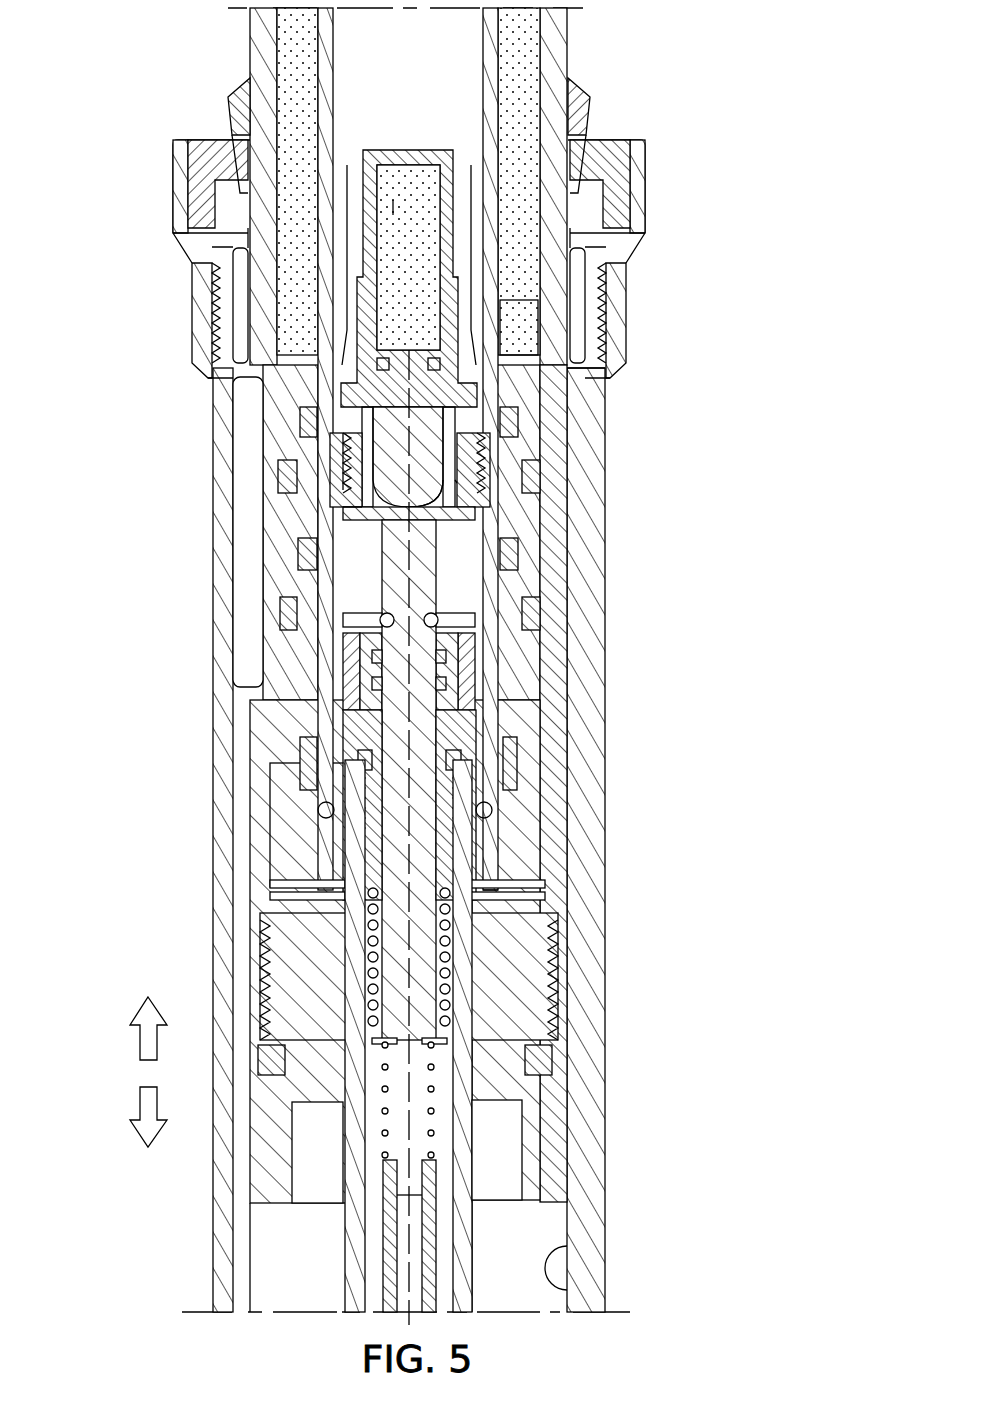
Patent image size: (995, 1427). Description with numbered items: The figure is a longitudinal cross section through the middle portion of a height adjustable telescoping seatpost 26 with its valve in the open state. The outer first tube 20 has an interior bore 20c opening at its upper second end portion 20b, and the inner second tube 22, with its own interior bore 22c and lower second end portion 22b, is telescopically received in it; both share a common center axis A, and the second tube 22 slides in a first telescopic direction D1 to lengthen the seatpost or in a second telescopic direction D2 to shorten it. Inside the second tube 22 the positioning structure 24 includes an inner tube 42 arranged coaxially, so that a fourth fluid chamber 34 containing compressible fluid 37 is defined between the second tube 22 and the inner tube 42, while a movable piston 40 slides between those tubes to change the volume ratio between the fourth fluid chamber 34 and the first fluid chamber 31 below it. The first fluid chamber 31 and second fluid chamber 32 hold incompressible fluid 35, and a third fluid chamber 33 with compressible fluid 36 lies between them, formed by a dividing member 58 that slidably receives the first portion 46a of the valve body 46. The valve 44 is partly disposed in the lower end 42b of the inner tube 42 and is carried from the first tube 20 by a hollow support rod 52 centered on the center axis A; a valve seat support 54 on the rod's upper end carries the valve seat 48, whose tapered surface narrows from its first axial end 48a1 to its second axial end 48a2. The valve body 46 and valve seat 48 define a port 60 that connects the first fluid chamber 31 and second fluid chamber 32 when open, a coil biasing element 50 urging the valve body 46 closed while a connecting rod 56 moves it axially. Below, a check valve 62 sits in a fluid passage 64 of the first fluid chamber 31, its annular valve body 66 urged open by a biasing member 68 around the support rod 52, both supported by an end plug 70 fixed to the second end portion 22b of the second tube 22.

The first tube 20 is at (607, 572).
The second end portion 20b is at (607, 425).
The interior bore 20c is at (550, 1290).
The second tube 22 is at (548, 514).
The second end portion 22b is at (555, 757).
The interior bore 22c is at (292, 283).
The positioning structure 24 is at (520, 335).
The telescoping seatpost 26 is at (690, 490).
The first fluid chamber 31 is at (483, 672).
The second fluid chamber 32 is at (408, 47).
The third fluid chamber 33 is at (393, 205).
The fourth fluid chamber 34 is at (303, 43).
The incompressible fluid 35 is at (427, 80).
The compressible fluid 36 is at (424, 190).
The compressible fluid 37 is at (295, 70).
The movable piston 40 is at (290, 418).
The inner tube 42 is at (497, 220).
The lower end 42b is at (493, 685).
The valve 44 is at (160, 497).
The valve body 46 is at (377, 487).
The first portion 46a is at (445, 458).
The valve seat 48 is at (380, 513).
The first axial end 48a1 is at (332, 455).
The second axial end 48a2 is at (347, 570).
The biasing element 50 is at (447, 990).
The support rod 52 is at (342, 1260).
The valve seat support 54 is at (373, 823).
The connecting rod 56 is at (380, 1233).
The dividing member 58 is at (420, 150).
The port 60 is at (470, 495).
The check valve 62 is at (657, 843).
The fluid passage 64 is at (480, 808).
The valve body 66 is at (497, 862).
The biasing member 68 is at (493, 902).
The end plug 70 is at (540, 1150).
The center axis A is at (405, 1118).
The first telescopic direction D1 is at (140, 1043).
The second telescopic direction D2 is at (140, 1103).